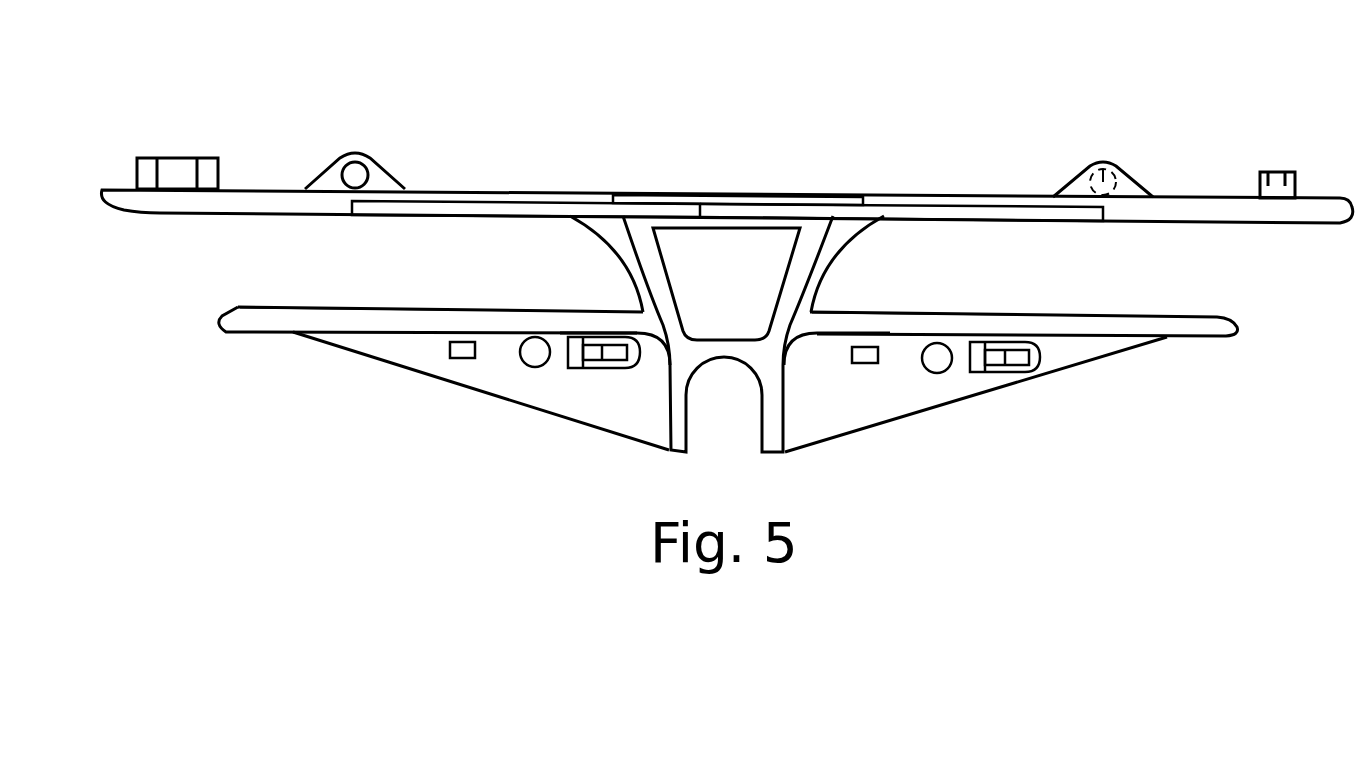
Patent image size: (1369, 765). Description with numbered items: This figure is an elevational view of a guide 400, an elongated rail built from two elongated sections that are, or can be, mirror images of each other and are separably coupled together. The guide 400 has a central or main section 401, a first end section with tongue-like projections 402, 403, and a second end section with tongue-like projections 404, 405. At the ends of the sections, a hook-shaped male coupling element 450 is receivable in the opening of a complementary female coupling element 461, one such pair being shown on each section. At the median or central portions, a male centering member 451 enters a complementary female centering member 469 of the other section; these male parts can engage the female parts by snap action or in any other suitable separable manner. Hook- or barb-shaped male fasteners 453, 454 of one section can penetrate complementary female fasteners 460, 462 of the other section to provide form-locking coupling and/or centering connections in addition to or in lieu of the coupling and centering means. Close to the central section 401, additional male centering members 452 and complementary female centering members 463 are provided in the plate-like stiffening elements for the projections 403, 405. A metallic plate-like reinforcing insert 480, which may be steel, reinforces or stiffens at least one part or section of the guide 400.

The guide 400 is at (832, 148).
The central section 401 is at (740, 253).
The projection 402 is at (495, 193).
The projection 404 is at (980, 196).
The reinforcing insert 480 is at (707, 207).
The projection 403 is at (522, 322).
The projection 405 is at (983, 322).
The female coupling element 461 is at (177, 175).
The female centering member 469 is at (357, 158).
The male centering member 451 is at (1113, 161).
The male coupling element 450 is at (1280, 171).
The female fastener 460 is at (463, 358).
The male centering member 452 is at (533, 367).
The male fastener 454 is at (582, 366).
The female fastener 462 is at (866, 363).
The female centering member 463 is at (935, 373).
The male fastener 453 is at (992, 372).